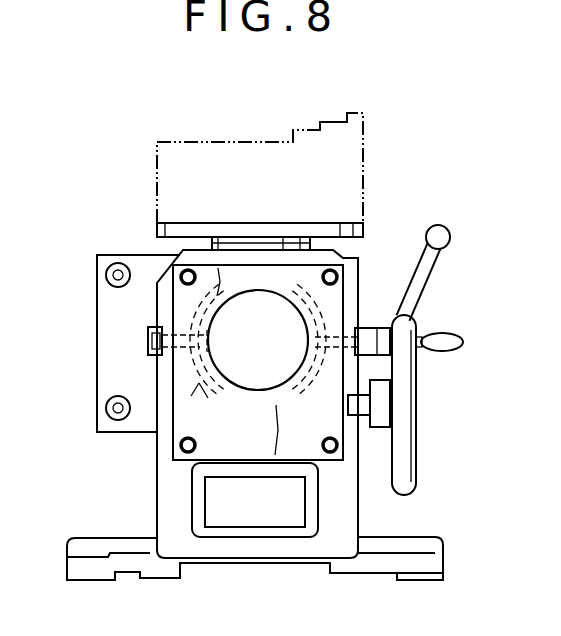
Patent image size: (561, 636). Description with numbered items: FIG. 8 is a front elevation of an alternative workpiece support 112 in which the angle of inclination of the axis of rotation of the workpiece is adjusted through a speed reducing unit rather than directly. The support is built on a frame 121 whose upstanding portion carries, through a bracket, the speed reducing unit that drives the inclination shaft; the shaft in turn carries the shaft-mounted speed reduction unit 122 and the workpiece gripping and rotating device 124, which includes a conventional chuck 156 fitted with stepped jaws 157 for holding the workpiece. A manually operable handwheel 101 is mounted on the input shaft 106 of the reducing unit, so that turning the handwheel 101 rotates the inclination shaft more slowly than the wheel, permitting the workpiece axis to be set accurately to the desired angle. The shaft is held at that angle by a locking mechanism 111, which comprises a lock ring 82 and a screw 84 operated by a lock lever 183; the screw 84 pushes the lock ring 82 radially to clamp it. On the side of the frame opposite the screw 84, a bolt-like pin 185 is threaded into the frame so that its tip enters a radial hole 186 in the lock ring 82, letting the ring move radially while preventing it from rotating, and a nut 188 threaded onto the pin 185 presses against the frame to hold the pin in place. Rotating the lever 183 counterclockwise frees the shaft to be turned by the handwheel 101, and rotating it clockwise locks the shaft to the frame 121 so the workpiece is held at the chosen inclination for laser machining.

The lock ring 82 is at (362, 259).
The screw 84 is at (345, 306).
The handwheel 101 is at (418, 445).
The input shaft 106 is at (364, 432).
The locking mechanism 111 is at (437, 278).
The workpiece support 112 is at (98, 202).
The frame 121 is at (418, 537).
The speed reduction unit 122 is at (140, 249).
The workpiece gripping and rotating device 124 is at (151, 226).
The chuck 156 is at (372, 158).
The stepped jaws 157 is at (330, 121).
The lock lever 183 is at (447, 229).
The pin 185 is at (148, 339).
The radial hole 186 is at (202, 386).
The nut 188 is at (152, 328).